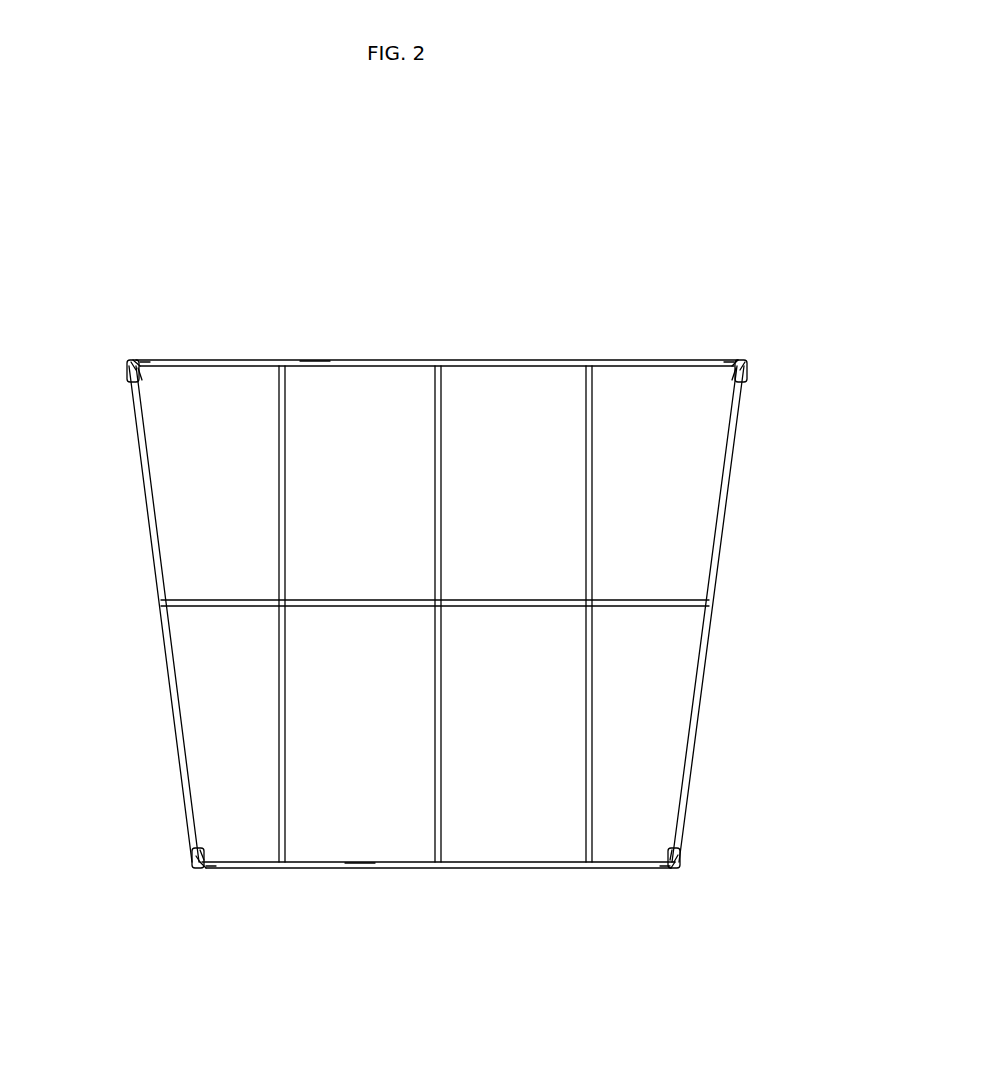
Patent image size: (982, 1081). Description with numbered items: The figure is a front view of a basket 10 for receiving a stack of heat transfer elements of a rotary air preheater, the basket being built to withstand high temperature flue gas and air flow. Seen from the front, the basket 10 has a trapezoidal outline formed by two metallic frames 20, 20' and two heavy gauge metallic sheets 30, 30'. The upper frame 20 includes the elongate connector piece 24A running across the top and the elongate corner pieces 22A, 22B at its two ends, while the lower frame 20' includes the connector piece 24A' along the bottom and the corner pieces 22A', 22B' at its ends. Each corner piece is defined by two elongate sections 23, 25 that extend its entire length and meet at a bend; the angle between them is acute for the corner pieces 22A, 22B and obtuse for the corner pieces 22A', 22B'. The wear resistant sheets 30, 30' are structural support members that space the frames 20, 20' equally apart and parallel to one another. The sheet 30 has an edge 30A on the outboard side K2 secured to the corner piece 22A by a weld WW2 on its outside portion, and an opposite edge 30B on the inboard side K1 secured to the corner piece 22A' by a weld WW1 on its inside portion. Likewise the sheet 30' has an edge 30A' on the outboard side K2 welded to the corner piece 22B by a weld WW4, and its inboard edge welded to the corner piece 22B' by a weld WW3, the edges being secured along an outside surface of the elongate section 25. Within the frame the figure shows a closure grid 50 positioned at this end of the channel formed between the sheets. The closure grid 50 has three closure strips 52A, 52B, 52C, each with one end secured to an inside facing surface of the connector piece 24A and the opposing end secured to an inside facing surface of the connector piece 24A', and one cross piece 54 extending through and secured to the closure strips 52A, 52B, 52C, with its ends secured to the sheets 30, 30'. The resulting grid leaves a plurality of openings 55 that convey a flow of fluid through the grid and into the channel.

The basket 10 is at (626, 226).
The metallic frame 20 is at (433, 318).
The metallic frame 20' is at (472, 930).
The corner piece 22A is at (119, 338).
The corner piece 22B is at (748, 329).
The corner piece 22A' is at (217, 891).
The corner piece 22B' is at (710, 878).
The elongate section 23 is at (146, 360).
The connector piece 24A is at (437, 339).
The connector piece 24A' is at (438, 910).
The elongate section 25 is at (148, 378).
The metallic sheet 30 is at (147, 614).
The metallic sheet 30' is at (724, 614).
The edge 30A is at (99, 380).
The edge 30A' is at (785, 375).
The edge 30B is at (195, 856).
The closure grid 50 is at (412, 638).
The closure strip 52A is at (286, 470).
The closure strip 52B is at (445, 466).
The closure strip 52C is at (598, 466).
The cross piece 54 is at (482, 610).
The openings 55 is at (224, 545).
The inboard side K1 is at (361, 886).
The outboard side K2 is at (312, 356).
The weld WW1 is at (200, 852).
The weld WW2 is at (130, 364).
The weld WW3 is at (682, 840).
The weld WW4 is at (748, 362).